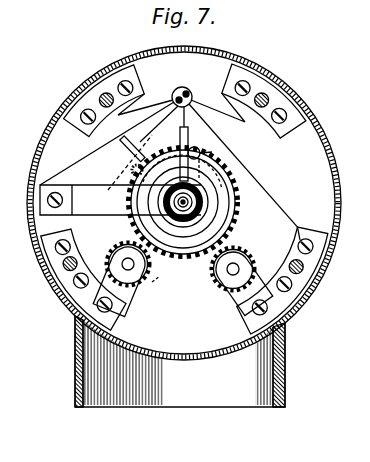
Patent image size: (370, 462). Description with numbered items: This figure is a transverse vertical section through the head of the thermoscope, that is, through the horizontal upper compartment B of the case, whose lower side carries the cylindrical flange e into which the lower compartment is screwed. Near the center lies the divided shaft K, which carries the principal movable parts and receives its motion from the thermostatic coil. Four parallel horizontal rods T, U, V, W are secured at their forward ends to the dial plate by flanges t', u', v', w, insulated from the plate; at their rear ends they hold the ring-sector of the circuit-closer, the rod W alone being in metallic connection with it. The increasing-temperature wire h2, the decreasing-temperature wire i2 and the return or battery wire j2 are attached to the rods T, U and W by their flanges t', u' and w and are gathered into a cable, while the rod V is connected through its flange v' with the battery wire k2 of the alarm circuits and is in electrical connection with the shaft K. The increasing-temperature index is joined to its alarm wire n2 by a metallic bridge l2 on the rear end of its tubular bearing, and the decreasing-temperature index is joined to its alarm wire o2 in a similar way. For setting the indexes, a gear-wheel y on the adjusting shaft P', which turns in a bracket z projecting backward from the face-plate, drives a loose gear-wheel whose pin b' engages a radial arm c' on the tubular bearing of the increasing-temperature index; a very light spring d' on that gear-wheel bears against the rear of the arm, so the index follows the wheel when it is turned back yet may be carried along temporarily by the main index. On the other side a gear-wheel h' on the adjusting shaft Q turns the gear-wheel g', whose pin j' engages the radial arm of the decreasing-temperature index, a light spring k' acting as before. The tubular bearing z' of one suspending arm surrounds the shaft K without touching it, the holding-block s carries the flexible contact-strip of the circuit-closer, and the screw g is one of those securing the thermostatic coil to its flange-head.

The cylindrical flange e is at (180, 361).
The upper compartment B is at (189, 203).
The horizontal rod T is at (80, 85).
The attaching flange t' is at (106, 92).
The horizontal rod U is at (300, 90).
The attaching flange u' is at (267, 100).
The horizontal rod V is at (44, 268).
The attaching flange v' is at (64, 262).
The horizontal rod W is at (330, 272).
The attaching flange w is at (300, 263).
The increasing-temperature-alarm-circuit wire n2 is at (116, 136).
The increasing-temperature wire h2 is at (145, 101).
The decreasing-temperature wire i2 is at (218, 107).
The divided shaft K is at (256, 172).
The return or battery wire j2 is at (290, 218).
The light spring k' is at (159, 124).
The decreasing-temperature-alarm-circuit wire o2 is at (196, 144).
The pin b' is at (190, 198).
The radial arm c' is at (183, 186).
The light spring d' is at (183, 198).
The holding-block s is at (199, 209).
The metallic bridge l2 is at (120, 200).
The pin j' is at (126, 153).
The screw g is at (119, 168).
The battery-alarm-circuit wire k2 is at (114, 185).
The adjusting shaft Q is at (125, 279).
The gear-wheel h' is at (126, 260).
The tubular bearing z' is at (121, 275).
The gear-wheel g' is at (160, 281).
The adjusting shaft P' is at (236, 280).
The gear-wheel y is at (237, 265).
The bracket z is at (235, 277).